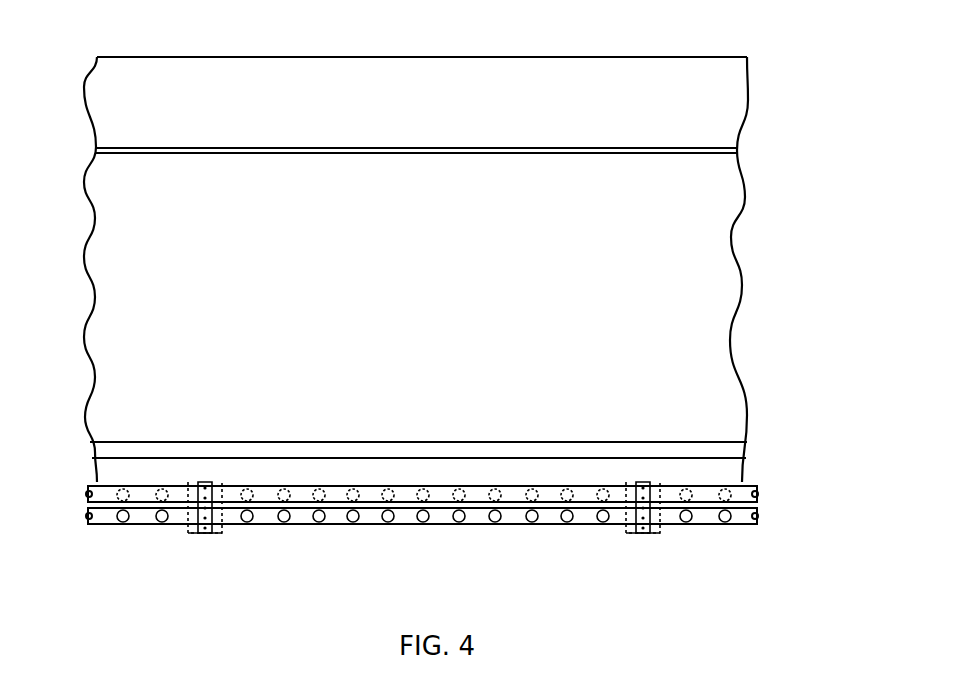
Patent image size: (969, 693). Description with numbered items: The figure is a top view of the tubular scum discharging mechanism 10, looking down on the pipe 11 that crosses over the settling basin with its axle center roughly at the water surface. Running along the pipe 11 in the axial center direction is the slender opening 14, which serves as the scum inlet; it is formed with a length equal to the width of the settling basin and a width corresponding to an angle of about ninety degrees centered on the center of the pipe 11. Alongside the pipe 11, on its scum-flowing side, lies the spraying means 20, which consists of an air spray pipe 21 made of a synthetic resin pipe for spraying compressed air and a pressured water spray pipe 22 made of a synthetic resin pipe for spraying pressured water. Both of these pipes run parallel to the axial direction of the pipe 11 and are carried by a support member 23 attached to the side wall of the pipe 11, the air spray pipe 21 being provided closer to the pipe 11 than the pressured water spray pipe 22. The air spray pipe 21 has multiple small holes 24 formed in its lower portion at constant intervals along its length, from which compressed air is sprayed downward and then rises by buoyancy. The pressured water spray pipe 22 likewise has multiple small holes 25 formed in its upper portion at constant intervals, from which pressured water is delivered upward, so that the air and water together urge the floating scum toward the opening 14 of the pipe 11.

The tubular scum discharging mechanism 10 is at (758, 58).
The pipe 11 is at (733, 115).
The opening 14 is at (720, 298).
The spraying means 20 is at (383, 528).
The air spray pipe 21 is at (752, 486).
The pressured water spray pipe 22 is at (757, 518).
The support member 23 is at (213, 535).
The small holes 24 is at (424, 447).
The small holes 25 is at (424, 548).